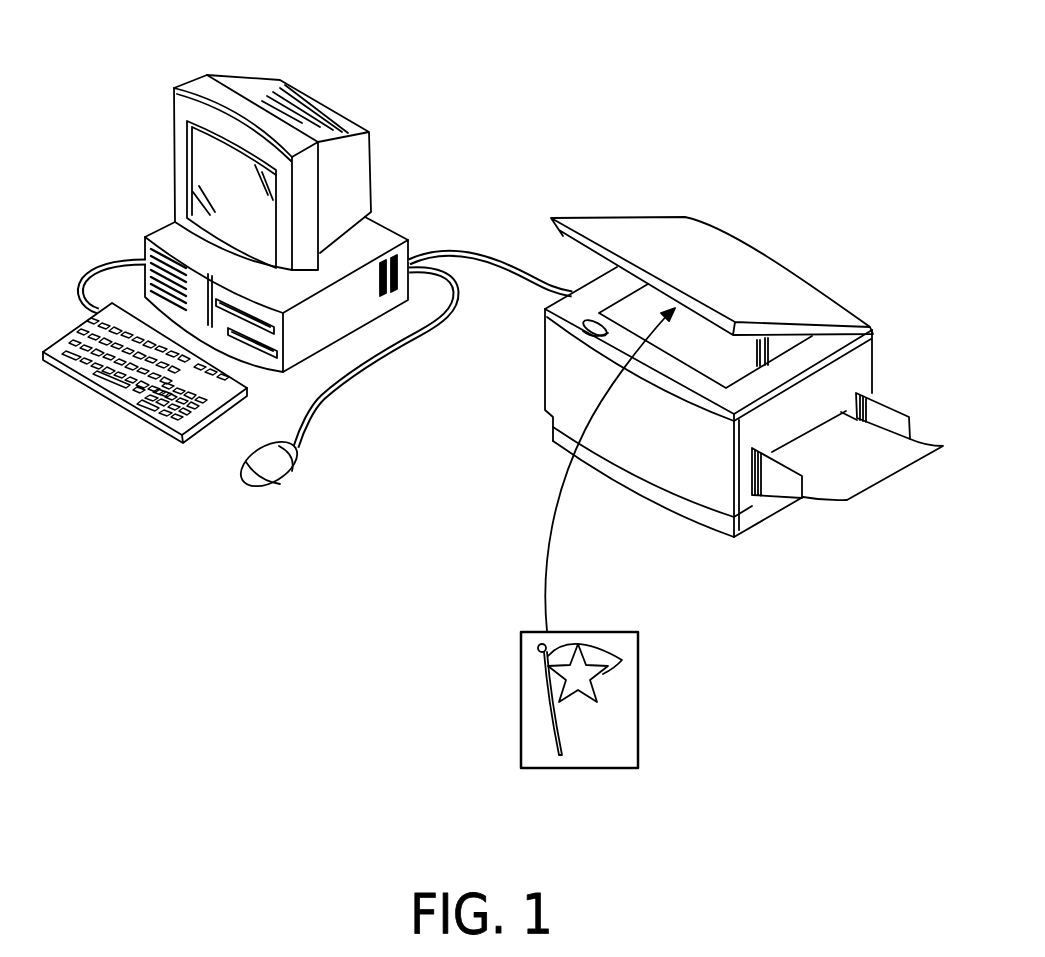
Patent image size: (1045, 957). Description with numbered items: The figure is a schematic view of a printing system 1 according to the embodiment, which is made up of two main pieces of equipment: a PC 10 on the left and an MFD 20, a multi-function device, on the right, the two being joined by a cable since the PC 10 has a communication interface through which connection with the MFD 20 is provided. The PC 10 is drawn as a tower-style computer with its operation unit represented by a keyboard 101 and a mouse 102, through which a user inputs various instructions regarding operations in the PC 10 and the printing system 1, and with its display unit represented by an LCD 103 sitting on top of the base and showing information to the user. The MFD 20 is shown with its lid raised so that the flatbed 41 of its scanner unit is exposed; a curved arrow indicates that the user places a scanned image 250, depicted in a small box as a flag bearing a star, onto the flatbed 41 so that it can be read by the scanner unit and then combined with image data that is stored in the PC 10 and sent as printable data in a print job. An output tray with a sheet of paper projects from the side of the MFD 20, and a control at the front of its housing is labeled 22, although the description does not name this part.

The printing system 1 is at (637, 101).
The PC (personal computer) 10 is at (243, 76).
The keyboard 101 is at (125, 400).
The mouse 102 is at (247, 483).
The LCD (liquid crystal display) 103 is at (203, 173).
The MFD (multi-function device) 20 is at (753, 238).
The operation button 22 is at (580, 338).
The flatbed 41 is at (707, 353).
The scanned image 250 is at (522, 688).